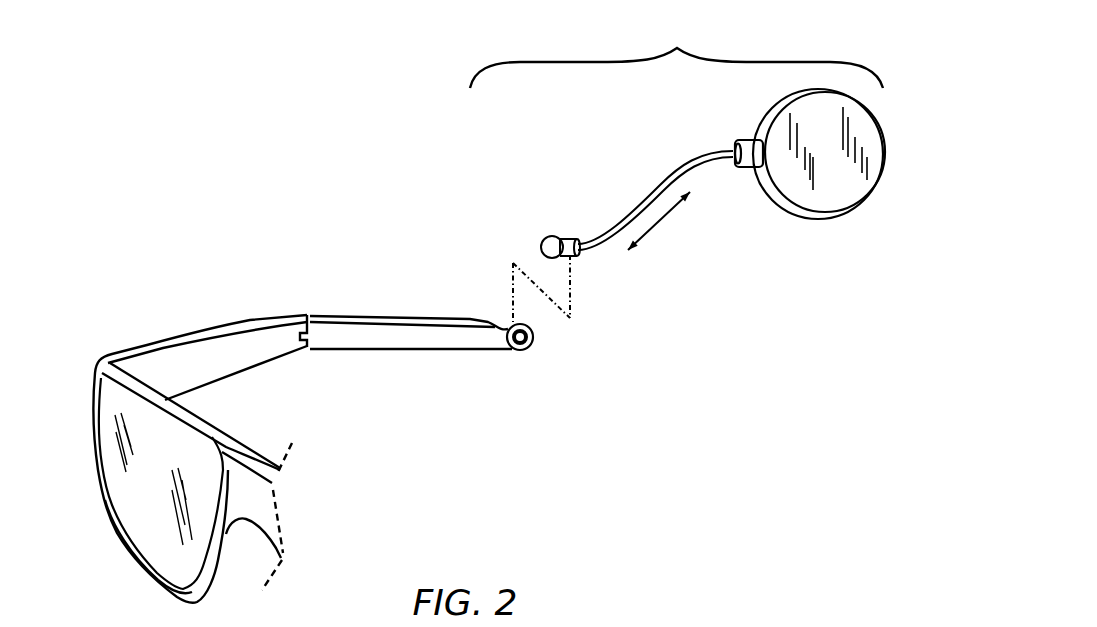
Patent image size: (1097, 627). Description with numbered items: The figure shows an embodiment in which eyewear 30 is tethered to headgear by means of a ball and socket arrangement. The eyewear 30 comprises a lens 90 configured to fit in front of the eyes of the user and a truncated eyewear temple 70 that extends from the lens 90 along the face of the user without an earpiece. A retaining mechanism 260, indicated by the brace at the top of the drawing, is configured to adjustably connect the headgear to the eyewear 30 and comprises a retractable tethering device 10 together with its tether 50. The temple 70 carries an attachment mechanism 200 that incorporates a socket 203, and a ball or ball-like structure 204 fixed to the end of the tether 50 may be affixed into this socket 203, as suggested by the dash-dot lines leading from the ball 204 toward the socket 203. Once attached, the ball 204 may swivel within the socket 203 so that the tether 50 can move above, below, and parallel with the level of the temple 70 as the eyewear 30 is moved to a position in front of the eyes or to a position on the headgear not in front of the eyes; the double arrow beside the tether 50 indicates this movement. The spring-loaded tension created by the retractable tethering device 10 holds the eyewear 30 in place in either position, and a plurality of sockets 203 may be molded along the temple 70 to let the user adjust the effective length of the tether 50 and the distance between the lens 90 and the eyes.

The retractable tethering device 10 is at (835, 217).
The eyewear 30 is at (380, 502).
The tether 50 is at (673, 168).
The eyewear temple 70 is at (237, 322).
The lens 90 is at (100, 514).
The attachment mechanism 200 is at (552, 360).
The socket 203 is at (498, 310).
The ball 204 is at (557, 237).
The retaining mechanism 260 is at (684, 141).